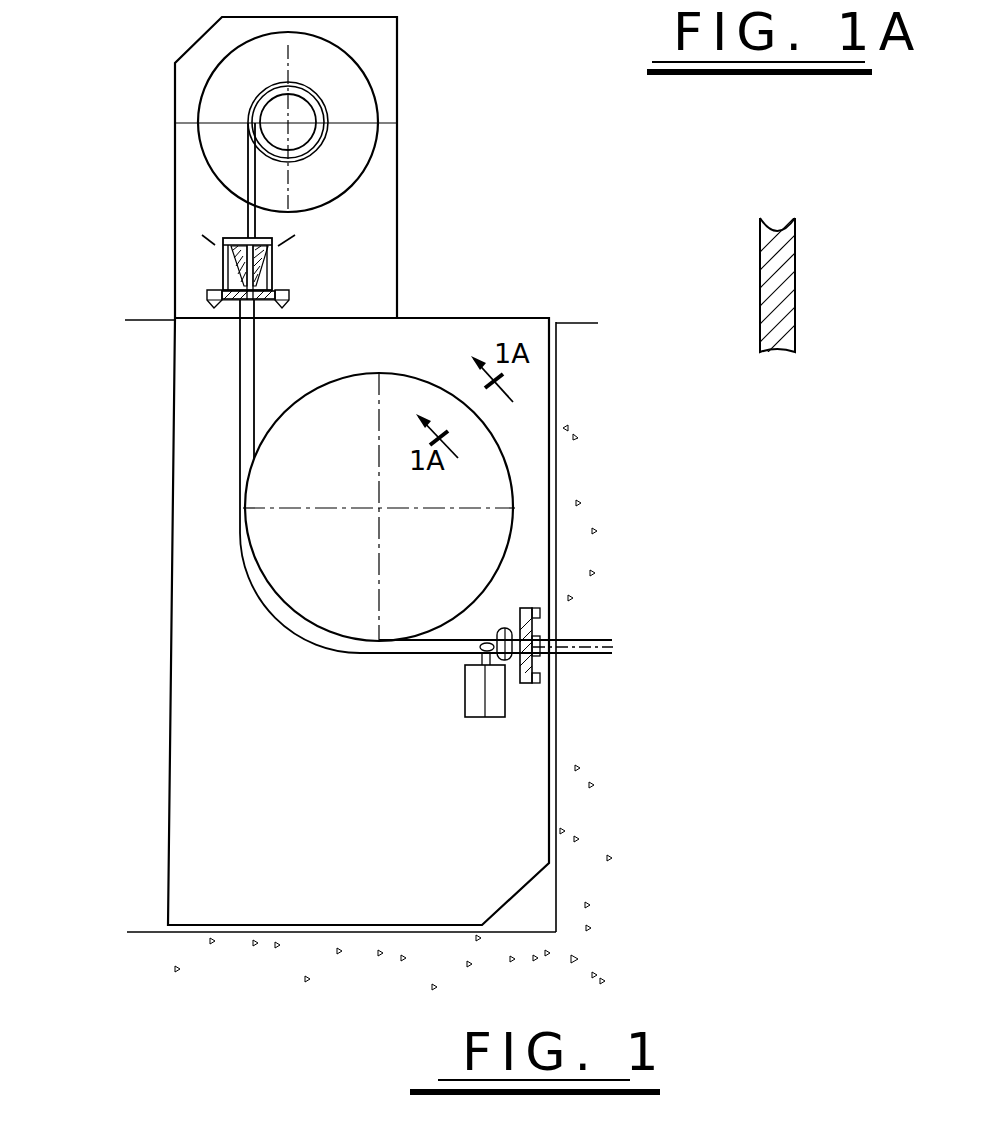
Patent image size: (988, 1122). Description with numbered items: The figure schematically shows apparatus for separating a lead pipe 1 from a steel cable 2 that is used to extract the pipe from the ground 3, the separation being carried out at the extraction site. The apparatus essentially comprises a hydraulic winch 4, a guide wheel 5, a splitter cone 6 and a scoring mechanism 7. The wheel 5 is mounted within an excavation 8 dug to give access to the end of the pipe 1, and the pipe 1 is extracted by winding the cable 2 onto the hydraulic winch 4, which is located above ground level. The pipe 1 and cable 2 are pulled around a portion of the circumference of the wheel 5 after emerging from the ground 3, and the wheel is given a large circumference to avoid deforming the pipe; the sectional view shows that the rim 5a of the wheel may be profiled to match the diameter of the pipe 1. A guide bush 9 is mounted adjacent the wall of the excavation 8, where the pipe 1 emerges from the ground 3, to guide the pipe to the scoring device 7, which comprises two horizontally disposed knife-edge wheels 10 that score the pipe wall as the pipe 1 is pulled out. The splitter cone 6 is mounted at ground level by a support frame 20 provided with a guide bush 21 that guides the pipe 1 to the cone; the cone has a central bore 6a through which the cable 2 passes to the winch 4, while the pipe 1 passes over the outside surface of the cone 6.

In FIG. 1, the lead pipe 1 is at (287, 247).
In FIG. 1, the steel cable 2 is at (246, 222).
In FIG. 1, the ground 3 is at (592, 433).
In FIG. 1, the hydraulic winch 4 is at (373, 88).
In FIG. 1, the guide wheel 5 is at (428, 390).
In FIG. 1A, the guide wheel 5 is at (795, 257).
In FIG. 1A, the rim 5a is at (778, 230).
In FIG. 1, the splitter cone 6 is at (240, 250).
In FIG. 1, the central bore 6a is at (255, 207).
In FIG. 1, the scoring mechanism 7 is at (482, 657).
In FIG. 1, the excavation 8 is at (98, 350).
In FIG. 1, the guide bush 9 is at (530, 633).
In FIG. 1, the knife-edge wheels 10 is at (486, 637).
In FIG. 1, the support frame 20 is at (277, 277).
In FIG. 1, the guide bush 21 is at (220, 303).